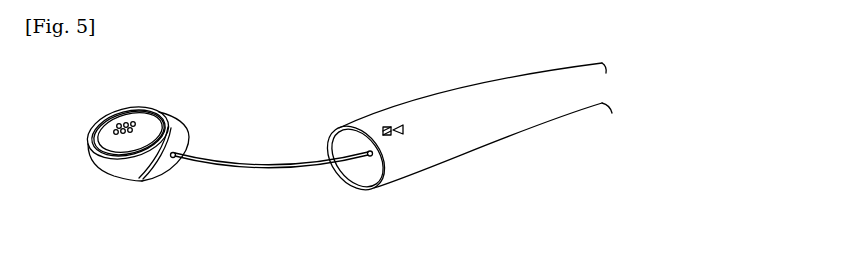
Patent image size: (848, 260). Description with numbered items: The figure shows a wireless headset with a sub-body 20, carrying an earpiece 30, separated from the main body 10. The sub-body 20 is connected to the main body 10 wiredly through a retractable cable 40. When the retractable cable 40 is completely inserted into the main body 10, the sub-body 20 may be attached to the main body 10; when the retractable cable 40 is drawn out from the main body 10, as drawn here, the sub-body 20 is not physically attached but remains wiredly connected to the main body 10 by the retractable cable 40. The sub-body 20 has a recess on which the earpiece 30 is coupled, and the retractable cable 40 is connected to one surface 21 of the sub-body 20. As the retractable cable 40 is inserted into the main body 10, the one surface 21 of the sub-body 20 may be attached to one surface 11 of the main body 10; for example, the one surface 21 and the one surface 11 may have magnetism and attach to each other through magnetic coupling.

The main body 10 is at (422, 160).
The one surface of the main body 11 is at (368, 172).
The sub-body 20 is at (125, 168).
The one surface of the sub-body 21 is at (163, 163).
The earpiece 30 is at (103, 133).
The retractable cable 40 is at (267, 170).